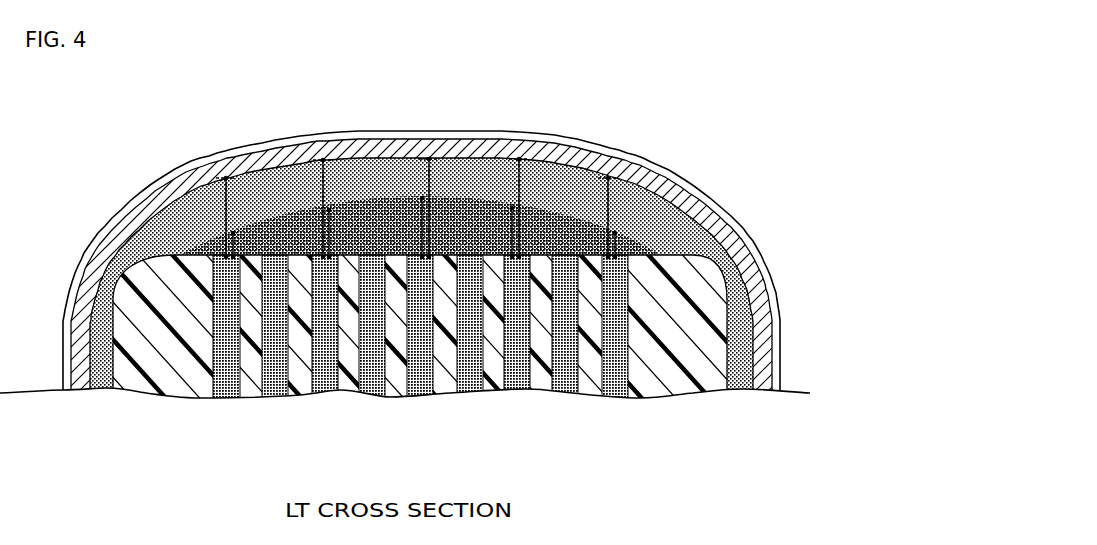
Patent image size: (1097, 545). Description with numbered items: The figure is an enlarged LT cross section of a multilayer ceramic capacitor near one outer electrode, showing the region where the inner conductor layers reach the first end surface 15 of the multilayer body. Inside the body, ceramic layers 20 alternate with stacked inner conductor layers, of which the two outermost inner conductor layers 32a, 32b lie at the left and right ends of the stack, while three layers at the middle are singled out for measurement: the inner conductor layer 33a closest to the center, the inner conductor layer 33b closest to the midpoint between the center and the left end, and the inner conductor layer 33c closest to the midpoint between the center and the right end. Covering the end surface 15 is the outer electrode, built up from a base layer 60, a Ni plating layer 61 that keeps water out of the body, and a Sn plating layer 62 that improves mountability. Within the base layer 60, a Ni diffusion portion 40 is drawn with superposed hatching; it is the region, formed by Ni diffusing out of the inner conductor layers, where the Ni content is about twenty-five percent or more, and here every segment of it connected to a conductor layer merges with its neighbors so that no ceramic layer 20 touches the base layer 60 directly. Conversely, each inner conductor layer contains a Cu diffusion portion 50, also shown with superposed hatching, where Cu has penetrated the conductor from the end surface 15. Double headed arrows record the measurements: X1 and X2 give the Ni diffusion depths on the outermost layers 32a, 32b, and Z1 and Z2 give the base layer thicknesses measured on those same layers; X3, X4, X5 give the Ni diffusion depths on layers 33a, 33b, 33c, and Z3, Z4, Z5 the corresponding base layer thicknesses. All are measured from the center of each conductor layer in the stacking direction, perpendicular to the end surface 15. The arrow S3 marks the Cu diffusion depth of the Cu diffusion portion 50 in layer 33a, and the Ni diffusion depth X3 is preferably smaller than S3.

The first end surface 15 is at (182, 252).
The ceramic layer 20 is at (567, 391).
The outermost inner conductor layer 32a is at (225, 398).
The outermost inner conductor layer 32b is at (613, 394).
The inner conductor layer 33a is at (418, 395).
The inner conductor layer 33b is at (323, 392).
The inner conductor layer 33c is at (517, 392).
The Ni diffusion portion 40 is at (458, 223).
The Cu diffusion portion 50 is at (268, 393).
The base layer 60 is at (660, 225).
The Ni plating layer 61 is at (713, 207).
The Sn plating layer 62 is at (750, 256).
The Cu diffusion depth measurement S3 is at (465, 392).
The Ni diffusion depth X1 is at (231, 233).
The Ni diffusion depth X2 is at (617, 233).
The Ni diffusion depth X3 is at (420, 198).
The Ni diffusion depth X4 is at (327, 210).
The Ni diffusion depth X5 is at (514, 208).
The base layer thickness Z1 is at (228, 180).
The base layer thickness Z2 is at (606, 179).
The base layer thickness Z3 is at (431, 161).
The base layer thickness Z4 is at (325, 160).
The base layer thickness Z5 is at (517, 159).